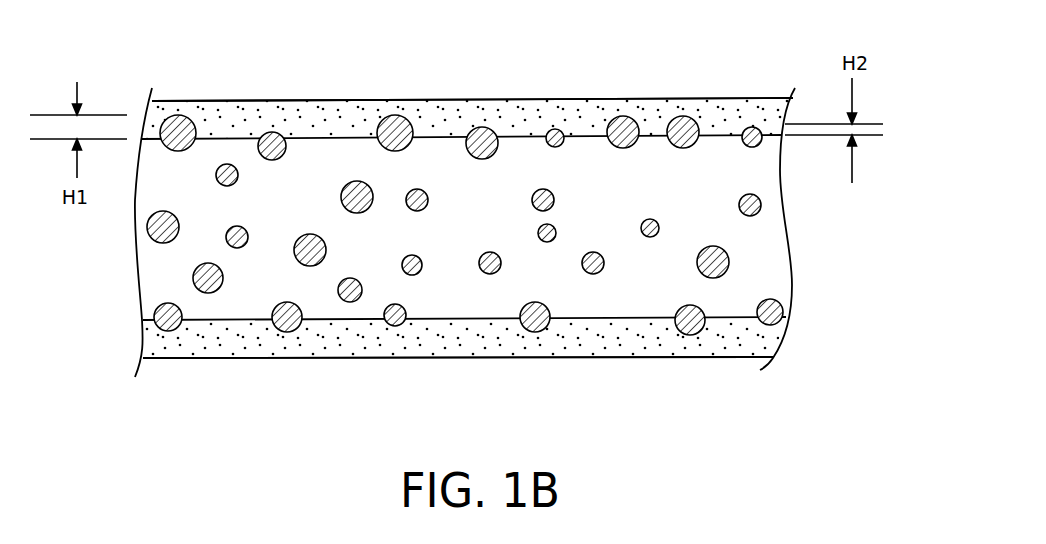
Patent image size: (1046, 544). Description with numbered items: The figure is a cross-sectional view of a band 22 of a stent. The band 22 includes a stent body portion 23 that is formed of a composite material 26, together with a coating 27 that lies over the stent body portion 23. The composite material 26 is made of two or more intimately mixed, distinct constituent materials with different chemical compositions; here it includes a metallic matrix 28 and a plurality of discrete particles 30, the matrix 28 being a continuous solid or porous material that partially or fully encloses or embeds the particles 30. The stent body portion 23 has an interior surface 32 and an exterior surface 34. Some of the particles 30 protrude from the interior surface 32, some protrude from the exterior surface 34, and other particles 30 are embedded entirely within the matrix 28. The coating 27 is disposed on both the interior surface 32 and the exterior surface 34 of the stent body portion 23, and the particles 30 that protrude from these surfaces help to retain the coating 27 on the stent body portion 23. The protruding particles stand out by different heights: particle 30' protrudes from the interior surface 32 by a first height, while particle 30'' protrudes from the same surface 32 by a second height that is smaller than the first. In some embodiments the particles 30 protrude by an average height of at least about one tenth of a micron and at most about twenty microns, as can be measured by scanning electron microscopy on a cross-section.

The band 22 is at (516, 70).
The stent body portion 23 is at (215, 151).
The composite material 26 is at (323, 297).
The coating 27 is at (603, 108).
The metallic matrix 28 is at (243, 303).
The particles 30 is at (465, 234).
The particle 30' is at (182, 97).
The particle 30'' is at (779, 80).
The interior surface 32 is at (725, 130).
The exterior surface 34 is at (733, 323).